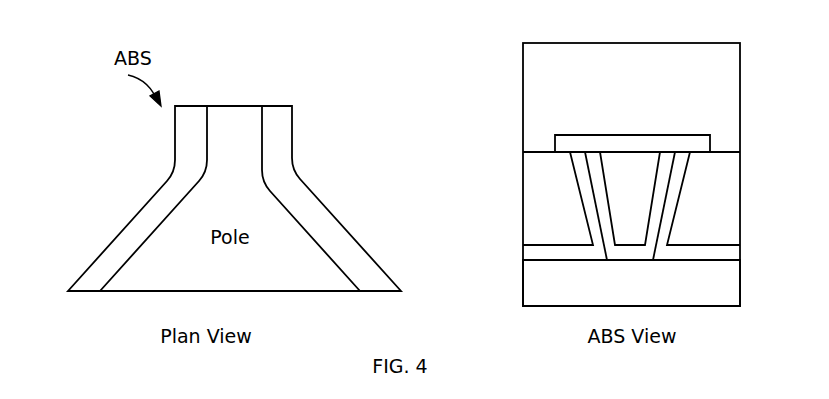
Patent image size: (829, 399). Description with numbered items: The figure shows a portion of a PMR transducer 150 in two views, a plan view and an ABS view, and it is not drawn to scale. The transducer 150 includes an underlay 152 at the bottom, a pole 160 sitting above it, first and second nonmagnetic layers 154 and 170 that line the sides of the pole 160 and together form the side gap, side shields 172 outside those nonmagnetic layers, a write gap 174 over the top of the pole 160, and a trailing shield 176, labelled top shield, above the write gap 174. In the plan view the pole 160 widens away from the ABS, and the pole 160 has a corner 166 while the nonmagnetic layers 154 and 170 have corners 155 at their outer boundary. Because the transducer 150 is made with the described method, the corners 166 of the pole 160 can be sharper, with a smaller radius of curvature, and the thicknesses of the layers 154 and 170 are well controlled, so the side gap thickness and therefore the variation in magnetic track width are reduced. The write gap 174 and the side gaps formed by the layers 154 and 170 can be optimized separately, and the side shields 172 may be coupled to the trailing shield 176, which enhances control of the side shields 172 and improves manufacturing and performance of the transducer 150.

The PMR transducer 150 is at (386, 36).
The underlayer 152 is at (523, 273).
The first nonmagnetic layer 154 is at (123, 228).
The corner of nonmagnetic layers 155 is at (167, 163).
The pole 160 is at (128, 291).
The pole corner 166 is at (283, 172).
The second nonmagnetic layer 170 is at (292, 128).
The side shield 172 is at (523, 198).
The write gap 174 is at (617, 135).
The trailing shield 176 is at (740, 105).